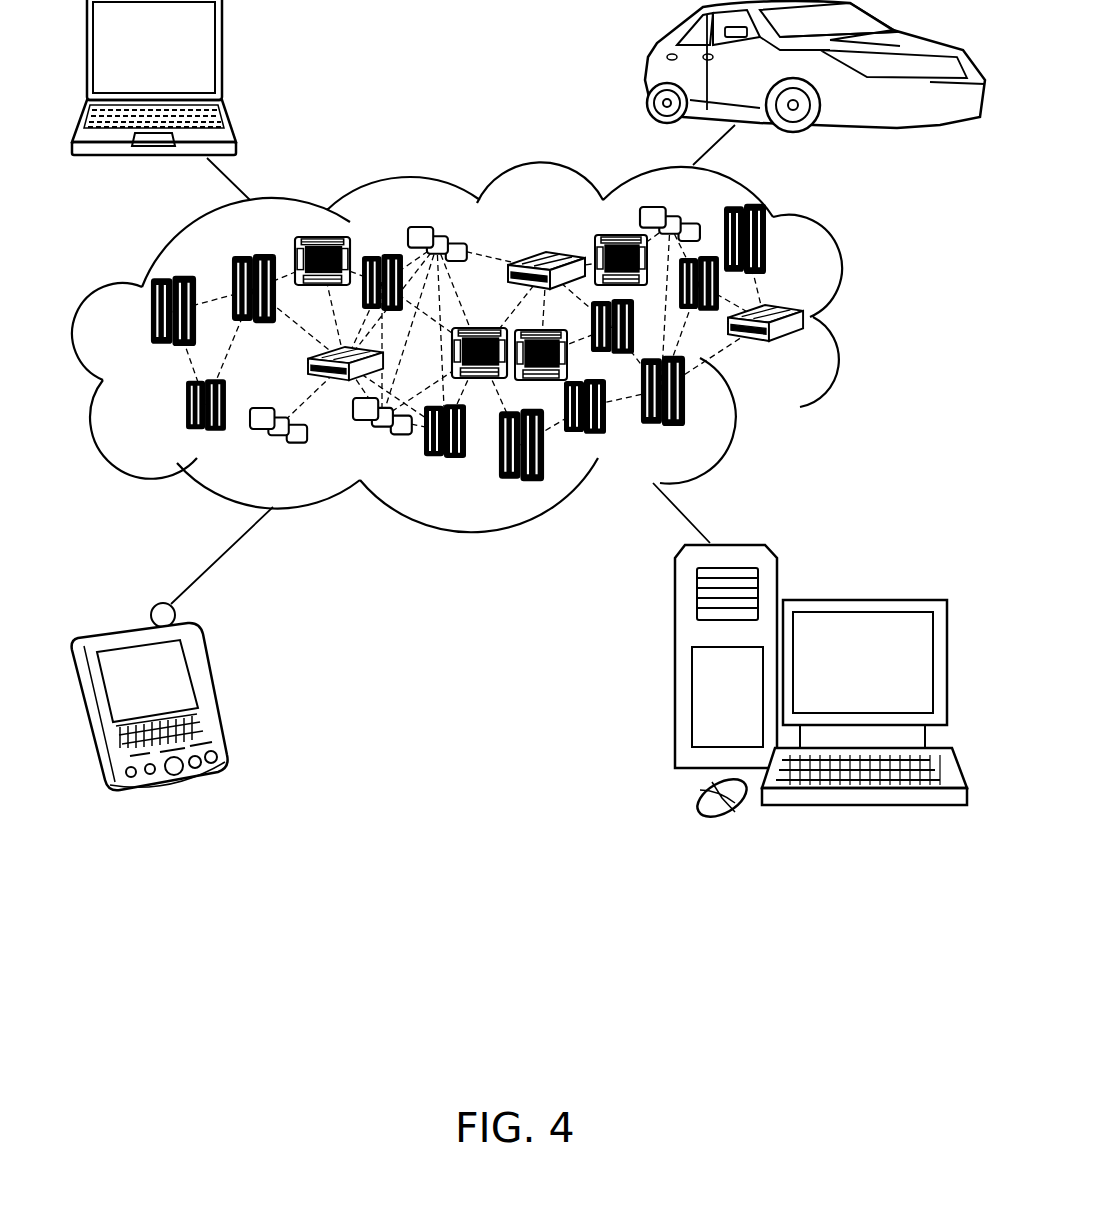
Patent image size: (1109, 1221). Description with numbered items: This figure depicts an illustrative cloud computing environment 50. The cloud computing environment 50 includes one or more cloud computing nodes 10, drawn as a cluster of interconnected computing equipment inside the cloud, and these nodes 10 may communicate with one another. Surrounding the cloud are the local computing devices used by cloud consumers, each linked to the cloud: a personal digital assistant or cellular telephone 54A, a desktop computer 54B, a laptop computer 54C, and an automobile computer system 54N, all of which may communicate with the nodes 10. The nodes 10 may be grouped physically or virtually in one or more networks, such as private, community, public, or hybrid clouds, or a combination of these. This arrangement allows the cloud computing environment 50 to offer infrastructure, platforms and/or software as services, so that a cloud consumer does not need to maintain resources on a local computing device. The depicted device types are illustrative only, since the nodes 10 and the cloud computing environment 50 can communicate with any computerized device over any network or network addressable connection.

The cloud computing node 10 is at (812, 351).
The cloud computing environment 50 is at (863, 323).
The personal digital assistant or cellular telephone 54A is at (212, 692).
The desktop computer 54B is at (862, 600).
The laptop computer 54C is at (222, 57).
The automobile computer system 54N is at (648, 72).